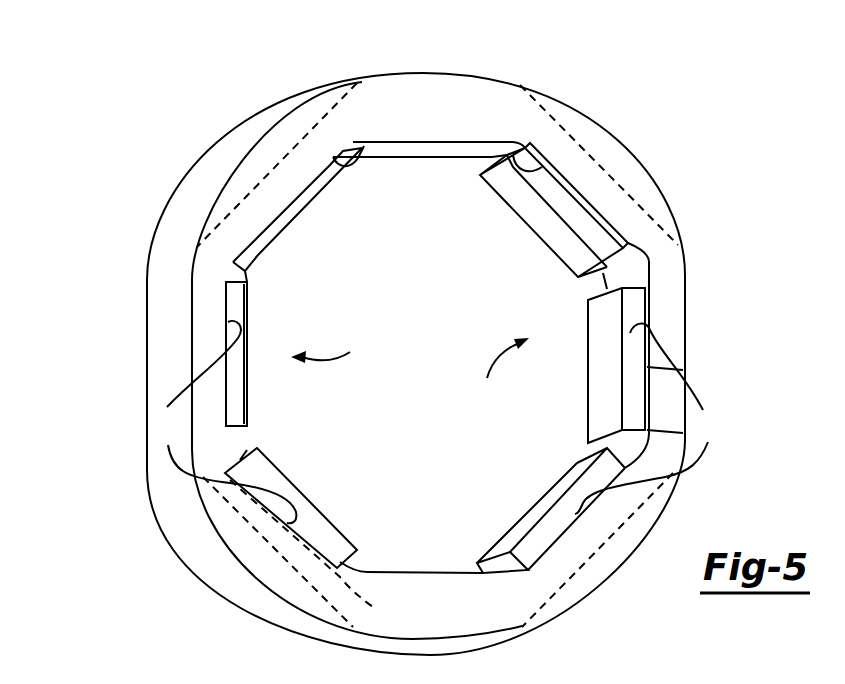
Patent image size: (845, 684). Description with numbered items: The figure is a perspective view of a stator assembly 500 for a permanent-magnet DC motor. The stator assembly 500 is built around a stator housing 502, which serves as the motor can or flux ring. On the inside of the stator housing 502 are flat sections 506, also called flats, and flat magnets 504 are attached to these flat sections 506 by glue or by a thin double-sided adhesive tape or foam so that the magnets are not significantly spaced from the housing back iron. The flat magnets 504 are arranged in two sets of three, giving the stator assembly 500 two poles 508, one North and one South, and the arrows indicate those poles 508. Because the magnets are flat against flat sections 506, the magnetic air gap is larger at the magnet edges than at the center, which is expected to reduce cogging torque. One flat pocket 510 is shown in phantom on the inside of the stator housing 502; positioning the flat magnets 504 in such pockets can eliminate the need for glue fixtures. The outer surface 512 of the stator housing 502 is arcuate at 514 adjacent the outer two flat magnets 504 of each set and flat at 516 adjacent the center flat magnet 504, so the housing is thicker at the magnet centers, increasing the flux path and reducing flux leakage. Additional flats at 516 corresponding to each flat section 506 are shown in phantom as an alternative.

The stator assembly 500 is at (167, 135).
The stator housing 502 is at (620, 155).
The flat magnets 504 is at (520, 210).
The flat sections 506 is at (516, 150).
The poles 508 is at (410, 365).
The flat pocket 510 is at (373, 607).
The outer surface 512 is at (430, 73).
The arcuate portion of outer surface 514 is at (655, 178).
The flat portion of outer surface 516 is at (300, 140).